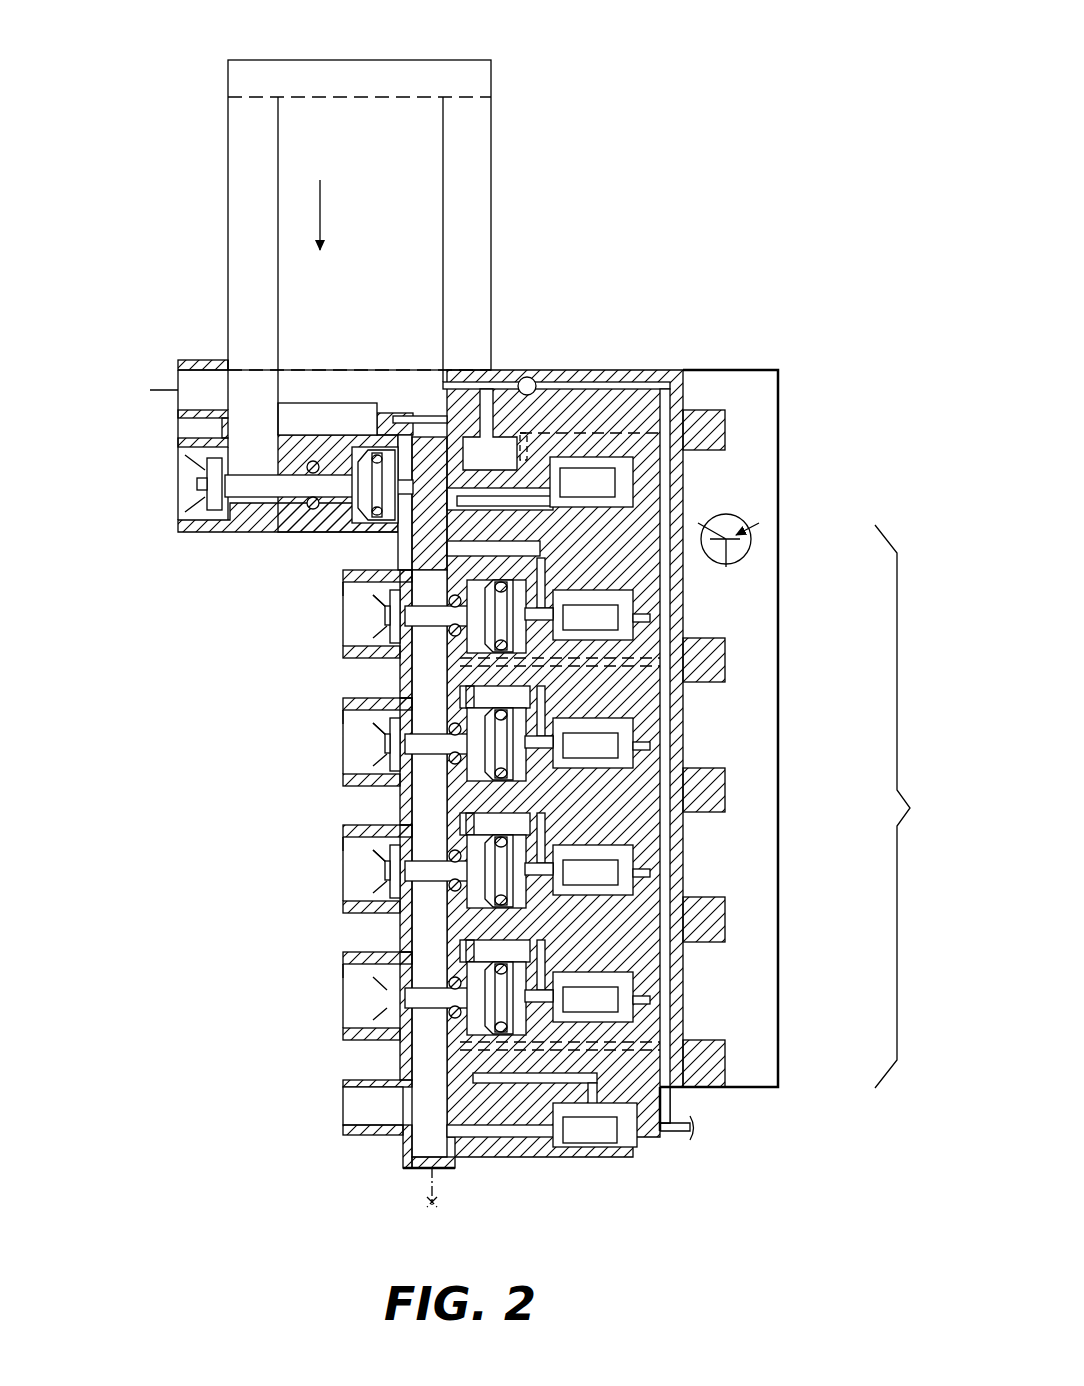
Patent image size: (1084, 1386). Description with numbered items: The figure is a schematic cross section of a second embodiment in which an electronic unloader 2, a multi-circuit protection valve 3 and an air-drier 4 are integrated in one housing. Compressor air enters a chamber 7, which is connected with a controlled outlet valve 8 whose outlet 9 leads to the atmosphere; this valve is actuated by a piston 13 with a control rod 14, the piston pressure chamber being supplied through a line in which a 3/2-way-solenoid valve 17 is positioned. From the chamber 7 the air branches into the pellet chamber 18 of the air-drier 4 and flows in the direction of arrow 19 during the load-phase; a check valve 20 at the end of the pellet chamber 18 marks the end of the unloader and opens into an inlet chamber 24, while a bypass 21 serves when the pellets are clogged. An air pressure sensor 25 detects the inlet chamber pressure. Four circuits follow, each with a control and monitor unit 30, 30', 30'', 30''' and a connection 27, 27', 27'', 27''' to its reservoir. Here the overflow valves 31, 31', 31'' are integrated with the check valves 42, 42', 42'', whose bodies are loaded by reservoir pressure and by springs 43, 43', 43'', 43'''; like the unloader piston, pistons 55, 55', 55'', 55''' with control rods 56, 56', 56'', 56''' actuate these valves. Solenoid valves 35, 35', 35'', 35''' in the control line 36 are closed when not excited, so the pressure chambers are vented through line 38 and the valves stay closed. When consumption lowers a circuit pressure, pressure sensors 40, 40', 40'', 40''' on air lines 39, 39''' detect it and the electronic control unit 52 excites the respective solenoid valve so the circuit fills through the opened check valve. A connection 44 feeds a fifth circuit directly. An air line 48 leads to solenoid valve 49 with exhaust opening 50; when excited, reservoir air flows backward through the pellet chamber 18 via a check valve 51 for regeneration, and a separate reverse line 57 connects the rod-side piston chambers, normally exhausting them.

The electronic unloader 2 is at (170, 362).
The multi-circuit protection valve 3 is at (905, 806).
The air-drier 4 is at (300, 55).
The chamber 7 is at (255, 118).
The controlled outlet valve 8 is at (165, 500).
The outlet 9 is at (178, 470).
The piston 13 is at (370, 485).
The control rod 14 is at (273, 485).
The 3/2-way-solenoid valve 17 is at (595, 430).
The pellet chamber 18 is at (413, 175).
The arrow 19 is at (320, 205).
The check valve 20 is at (415, 425).
The bypass 21 is at (487, 440).
The inlet chamber 24 is at (428, 1143).
The air pressure sensor 25 is at (727, 430).
The connection 27 is at (295, 579).
The connection 27' is at (288, 686).
The connection 27'' is at (288, 816).
The connection 27''' is at (286, 939).
The control and monitor unit 30 is at (691, 567).
The control and monitor unit 30' is at (694, 710).
The control and monitor unit 30'' is at (698, 840).
The control and monitor unit 30''' is at (702, 971).
The overflow valve 31 is at (279, 588).
The overflow valve 31' is at (274, 717).
The overflow valve 31'' is at (268, 847).
The solenoid valve 35 is at (651, 599).
The solenoid valve 35' is at (644, 727).
The solenoid valve 35'' is at (652, 850).
The solenoid valve 35''' is at (652, 978).
The control line 36 is at (547, 523).
The line 38 is at (690, 1128).
The air line 39 is at (592, 674).
The air line 39''' is at (560, 1135).
The pressure sensor 40 is at (749, 645).
The pressure sensor 40' is at (758, 786).
The pressure sensor 40'' is at (757, 906).
The pressure sensor 40''' is at (731, 1080).
The check valve 42 is at (320, 616).
The check valve 42' is at (320, 744).
The check valve 42'' is at (320, 871).
The spring 43 is at (322, 634).
The spring 43' is at (380, 755).
The spring 43'' is at (380, 882).
The spring 43''' is at (380, 1010).
The connection 44 is at (365, 1108).
The air line 48 is at (503, 1080).
The solenoid valve 49 is at (595, 1162).
The exhaust opening 50 is at (680, 1137).
The check valve 51 is at (527, 378).
The electronic control unit 52 is at (745, 380).
The piston 55 is at (586, 611).
The piston 55' is at (609, 745).
The piston 55'' is at (599, 871).
The piston 55''' is at (603, 998).
The control rod 56 is at (392, 647).
The control rod 56' is at (389, 772).
The control rod 56'' is at (389, 901).
The control rod 56''' is at (384, 1034).
The reverse line 57 is at (621, 390).